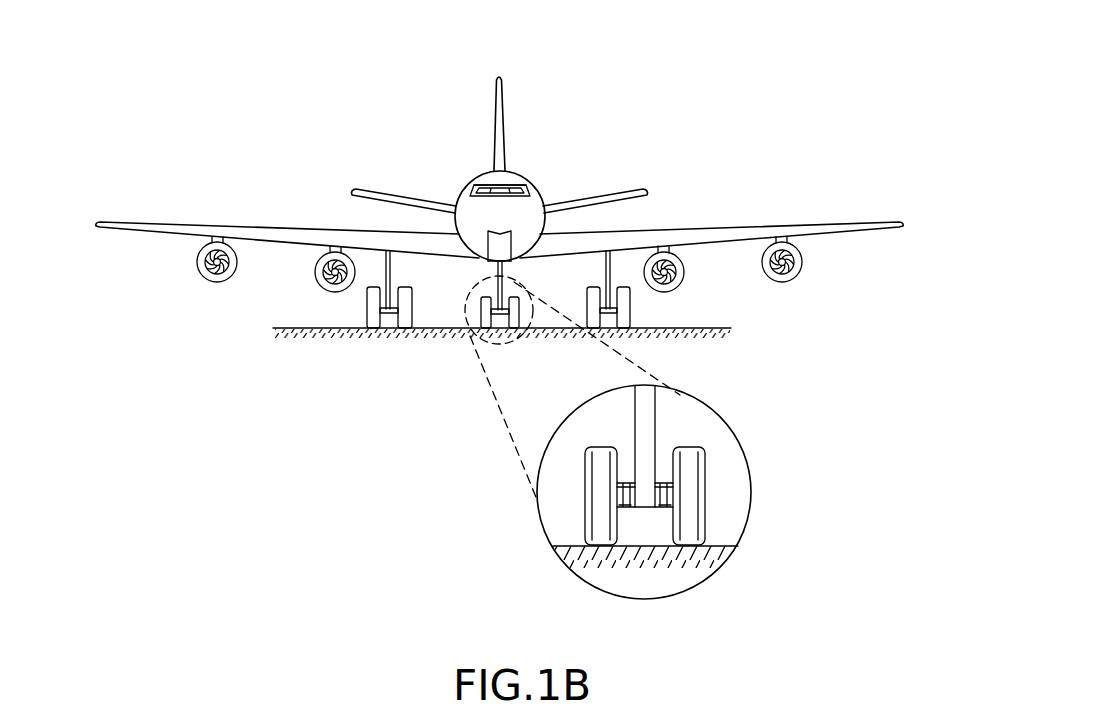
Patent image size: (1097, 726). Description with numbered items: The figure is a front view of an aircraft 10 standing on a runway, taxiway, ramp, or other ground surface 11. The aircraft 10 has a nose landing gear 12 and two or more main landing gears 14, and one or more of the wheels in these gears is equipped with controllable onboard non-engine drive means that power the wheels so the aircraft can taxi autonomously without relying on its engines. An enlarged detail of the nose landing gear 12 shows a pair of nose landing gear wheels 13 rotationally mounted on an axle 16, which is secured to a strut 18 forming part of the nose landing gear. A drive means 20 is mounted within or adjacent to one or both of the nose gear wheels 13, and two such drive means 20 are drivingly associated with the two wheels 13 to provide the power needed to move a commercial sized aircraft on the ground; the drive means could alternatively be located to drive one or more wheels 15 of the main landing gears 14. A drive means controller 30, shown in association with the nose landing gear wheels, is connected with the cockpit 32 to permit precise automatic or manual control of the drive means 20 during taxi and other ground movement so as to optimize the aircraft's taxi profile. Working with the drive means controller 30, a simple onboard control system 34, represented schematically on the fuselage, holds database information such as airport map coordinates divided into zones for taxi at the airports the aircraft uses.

The aircraft 10 is at (499, 349).
The ground surface 11 is at (732, 545).
The nose landing gear 12 is at (616, 453).
The nose landing gear wheels 13 is at (585, 526).
The main landing gears 14 is at (496, 316).
The wheels 15 is at (413, 318).
The axle 16 is at (662, 490).
The strut 18 is at (645, 423).
The drive means 20 is at (620, 492).
The drive means controller 30 is at (626, 507).
The cockpit 32 is at (511, 188).
The onboard control system 34 is at (501, 243).